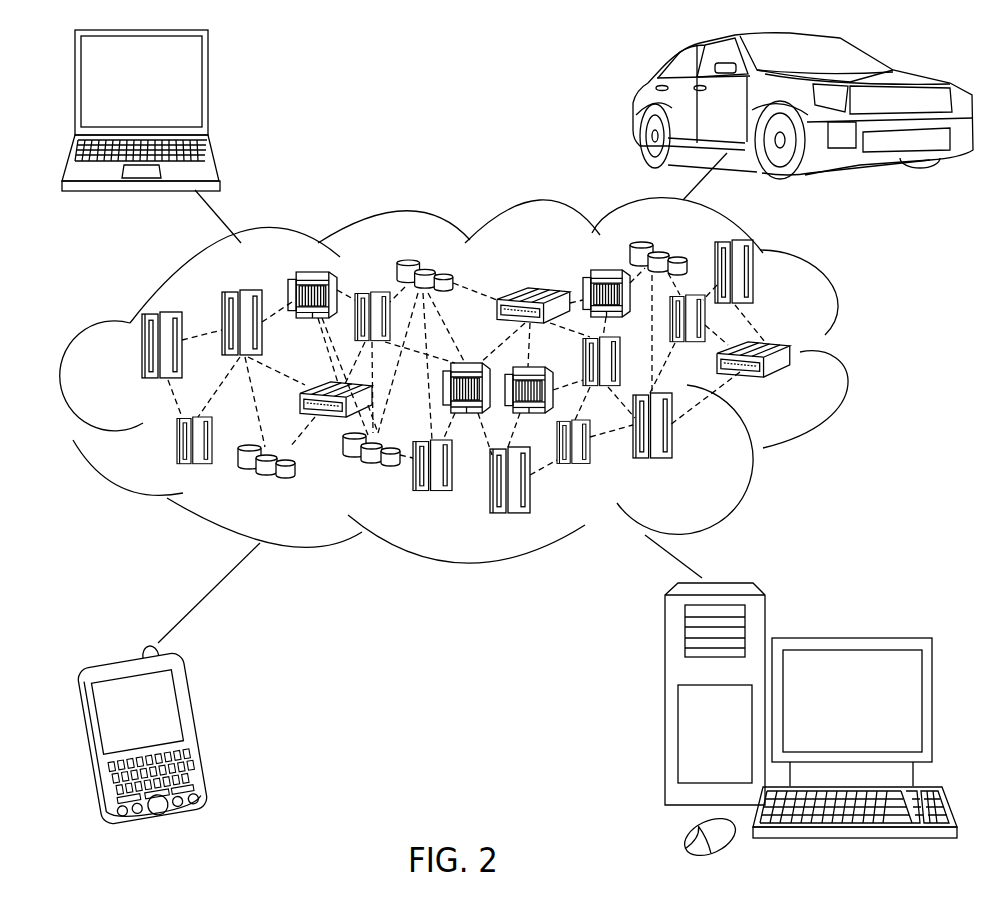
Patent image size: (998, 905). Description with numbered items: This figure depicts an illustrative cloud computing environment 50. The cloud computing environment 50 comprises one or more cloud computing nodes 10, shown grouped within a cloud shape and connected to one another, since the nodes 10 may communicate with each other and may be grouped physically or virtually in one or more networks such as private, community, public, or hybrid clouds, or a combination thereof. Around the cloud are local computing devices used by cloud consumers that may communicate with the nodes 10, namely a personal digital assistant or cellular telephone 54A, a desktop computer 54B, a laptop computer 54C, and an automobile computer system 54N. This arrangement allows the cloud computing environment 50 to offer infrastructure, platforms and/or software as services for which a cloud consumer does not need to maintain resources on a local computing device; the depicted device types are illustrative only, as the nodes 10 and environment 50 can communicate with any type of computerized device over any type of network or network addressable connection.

The cloud computing node 10 is at (797, 387).
The cloud computing environment 50 is at (484, 381).
The personal digital assistant (PDA) or cellular telephone 54A is at (198, 728).
The desktop computer 54B is at (848, 638).
The laptop computer 54C is at (209, 90).
The automobile computer system 54N is at (637, 105).